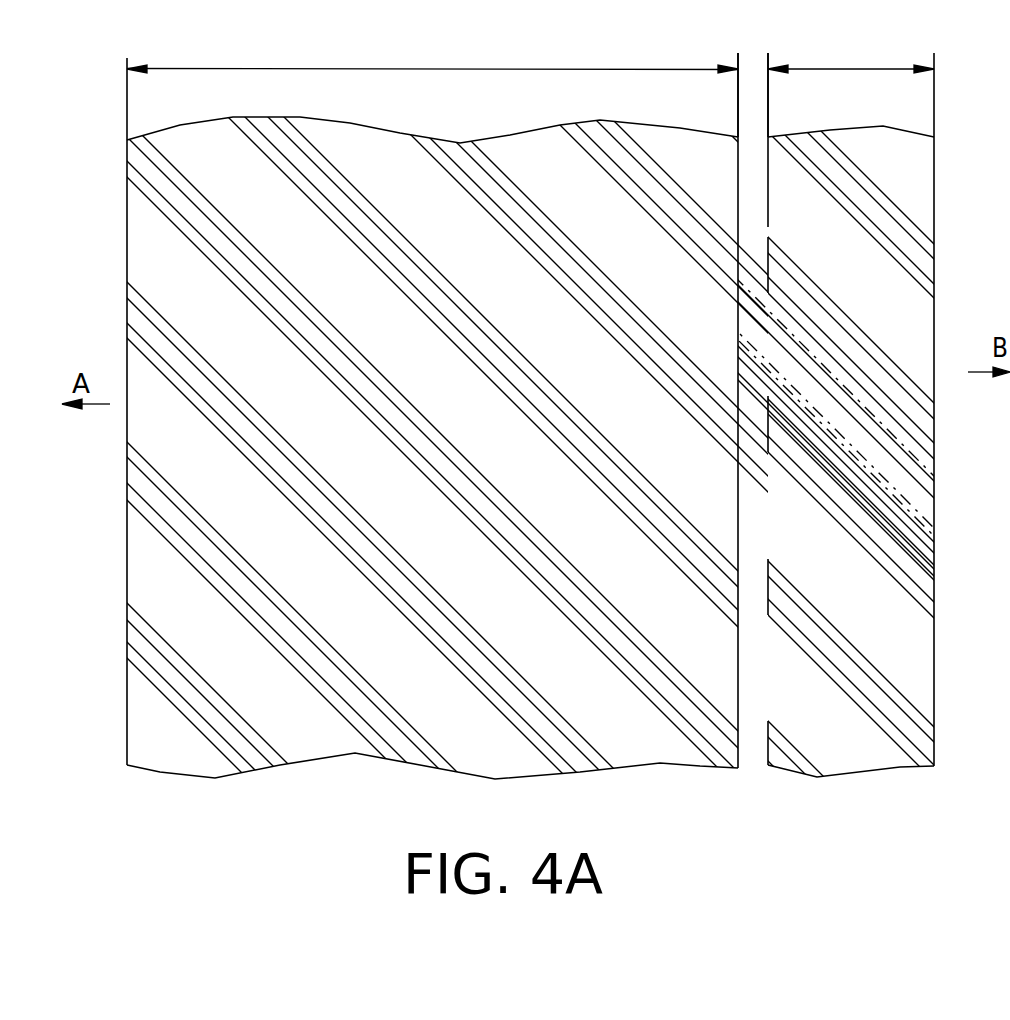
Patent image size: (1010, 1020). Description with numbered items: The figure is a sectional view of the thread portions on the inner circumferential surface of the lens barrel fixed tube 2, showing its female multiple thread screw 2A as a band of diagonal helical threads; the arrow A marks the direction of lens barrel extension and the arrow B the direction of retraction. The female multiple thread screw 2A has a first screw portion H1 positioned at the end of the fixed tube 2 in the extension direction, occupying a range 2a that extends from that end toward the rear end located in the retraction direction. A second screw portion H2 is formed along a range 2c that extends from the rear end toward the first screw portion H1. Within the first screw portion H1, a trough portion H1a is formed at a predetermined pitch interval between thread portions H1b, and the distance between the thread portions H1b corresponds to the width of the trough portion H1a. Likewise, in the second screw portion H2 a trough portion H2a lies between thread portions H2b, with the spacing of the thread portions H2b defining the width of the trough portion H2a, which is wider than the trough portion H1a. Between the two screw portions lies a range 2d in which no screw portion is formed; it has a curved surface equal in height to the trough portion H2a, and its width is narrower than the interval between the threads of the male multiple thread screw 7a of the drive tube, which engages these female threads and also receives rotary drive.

The fixed tube 2 is at (505, 509).
The female multiple thread screw 2A is at (517, 770).
The range 2a is at (432, 55).
The range 2c is at (851, 52).
The range 2d is at (746, 77).
The male multiple thread screw 7a is at (917, 537).
The first screw portion H1 is at (505, 441).
The trough portion H1a is at (708, 725).
The thread portions H1b is at (622, 748).
The second screw portion H2 is at (550, 526).
The trough portion H2a is at (838, 750).
The thread portions H2b is at (918, 738).